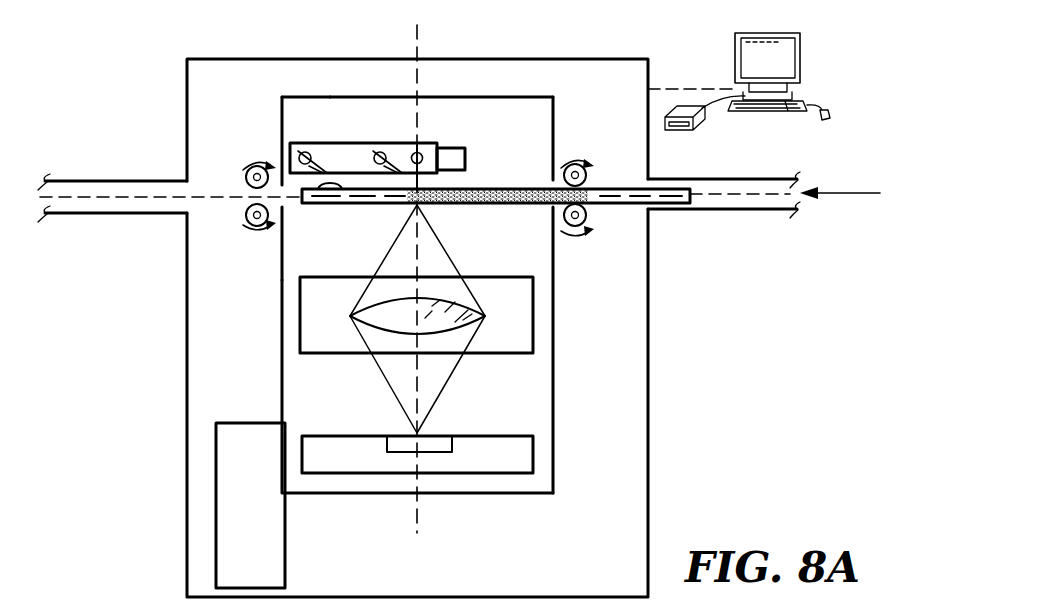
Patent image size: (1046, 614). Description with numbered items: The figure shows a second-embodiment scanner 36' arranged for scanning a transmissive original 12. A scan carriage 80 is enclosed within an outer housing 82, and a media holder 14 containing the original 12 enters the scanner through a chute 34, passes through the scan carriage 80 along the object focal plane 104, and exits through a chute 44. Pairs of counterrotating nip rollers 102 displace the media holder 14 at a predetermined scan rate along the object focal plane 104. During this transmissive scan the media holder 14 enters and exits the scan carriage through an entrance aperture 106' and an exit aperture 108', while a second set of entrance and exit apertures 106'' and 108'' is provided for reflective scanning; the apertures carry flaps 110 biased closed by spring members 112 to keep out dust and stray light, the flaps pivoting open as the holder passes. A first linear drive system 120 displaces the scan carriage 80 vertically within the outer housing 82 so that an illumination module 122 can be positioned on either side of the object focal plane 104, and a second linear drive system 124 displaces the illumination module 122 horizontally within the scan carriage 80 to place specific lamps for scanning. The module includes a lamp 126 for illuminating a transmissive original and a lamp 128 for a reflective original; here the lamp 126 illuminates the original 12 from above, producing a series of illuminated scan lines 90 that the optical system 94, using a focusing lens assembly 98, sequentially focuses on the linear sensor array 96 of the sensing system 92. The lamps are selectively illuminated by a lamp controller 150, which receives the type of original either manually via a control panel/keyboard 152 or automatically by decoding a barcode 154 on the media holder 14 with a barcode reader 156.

The scanner 36' is at (352, 110).
The outer housing 82 is at (187, 330).
The object focal plane 104 is at (177, 194).
The chute 44 is at (137, 211).
The chute 34 is at (743, 204).
The scan carriage 80 is at (553, 425).
The spring members 112 is at (282, 103).
The exit aperture 108'' is at (319, 55).
The flaps 110 is at (282, 112).
The exit aperture 108' is at (312, 240).
The entrance aperture 106'' is at (592, 128).
The entrance aperture 106' is at (587, 350).
The nip rollers 102 is at (247, 213).
The illumination module 122 is at (403, 145).
The lamp 128 is at (393, 145).
The lamp 126 is at (421, 148).
The second linear drive system 124 is at (455, 148).
The media holder 14 is at (668, 203).
The original 12 is at (485, 188).
The barcode 154 is at (345, 204).
The scan line 90 is at (413, 207).
The optical system 94 is at (306, 330).
The focusing lens assembly 98 is at (452, 325).
The sensing system 92 is at (525, 457).
The linear sensor array 96 is at (410, 448).
The first linear drive system 120 is at (271, 513).
The lamp controller 150 is at (790, 98).
The control panel/keyboard 152 is at (768, 104).
The barcode reader 156 is at (694, 124).